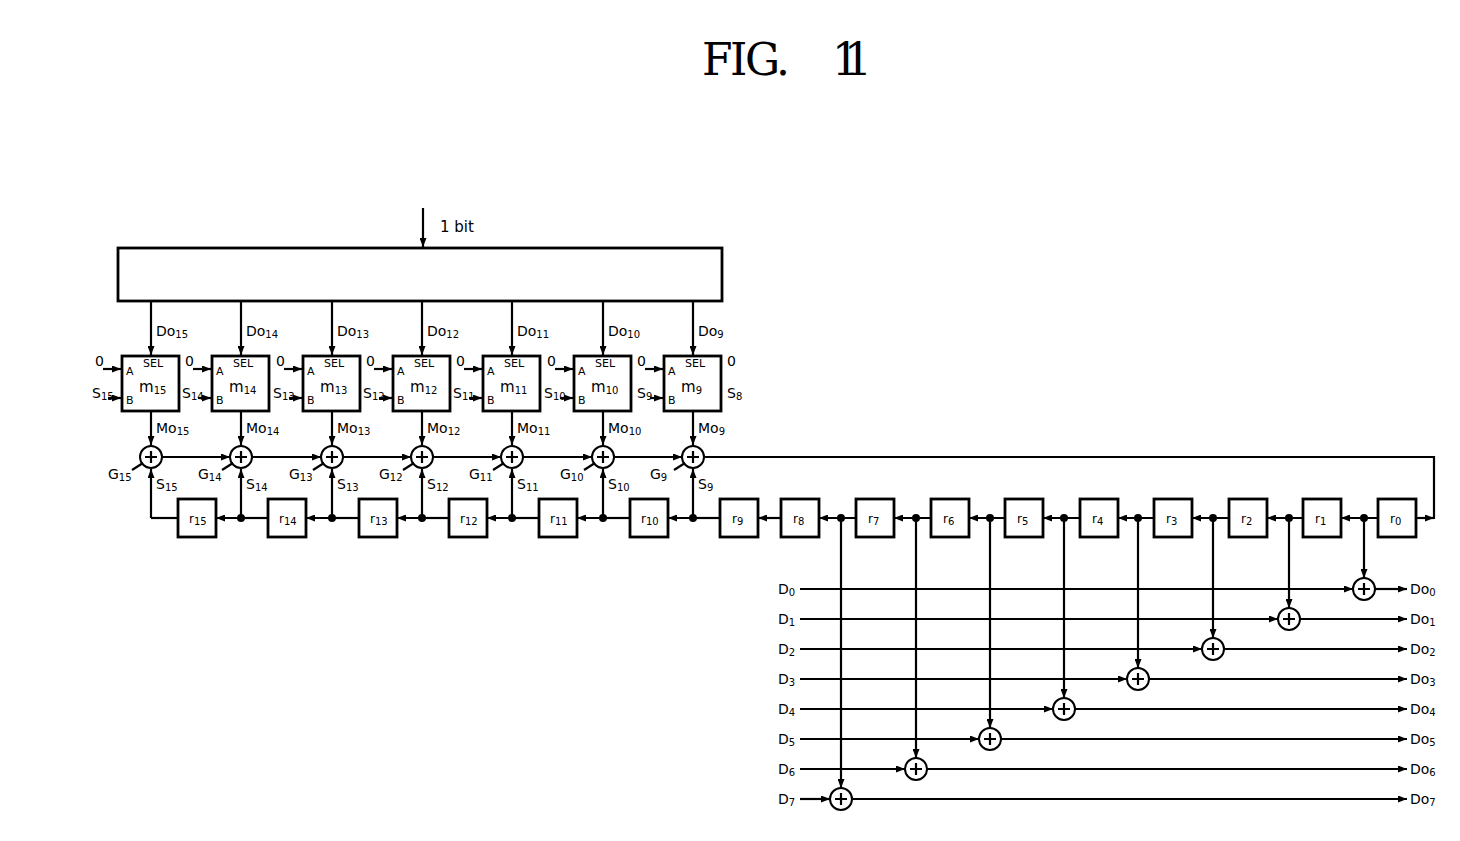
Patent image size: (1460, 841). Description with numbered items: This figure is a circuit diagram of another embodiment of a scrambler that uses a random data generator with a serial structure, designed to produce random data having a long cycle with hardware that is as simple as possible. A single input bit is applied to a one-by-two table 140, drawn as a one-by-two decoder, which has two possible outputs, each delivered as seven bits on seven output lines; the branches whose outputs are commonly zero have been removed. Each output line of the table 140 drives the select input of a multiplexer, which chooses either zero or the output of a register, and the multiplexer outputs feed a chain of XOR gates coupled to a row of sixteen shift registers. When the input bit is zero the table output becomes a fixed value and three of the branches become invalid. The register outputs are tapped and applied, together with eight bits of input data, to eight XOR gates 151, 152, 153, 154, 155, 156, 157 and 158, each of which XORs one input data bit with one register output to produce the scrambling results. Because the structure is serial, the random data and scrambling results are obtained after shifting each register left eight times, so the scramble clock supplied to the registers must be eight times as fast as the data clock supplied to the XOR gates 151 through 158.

The 1×2 table 140 is at (606, 247).
The XOR gate 151 is at (1372, 581).
The XOR gate 152 is at (1297, 611).
The XOR gate 153 is at (1221, 641).
The XOR gate 154 is at (1146, 671).
The XOR gate 155 is at (1072, 701).
The XOR gate 156 is at (998, 731).
The XOR gate 157 is at (924, 761).
The XOR gate 158 is at (849, 791).